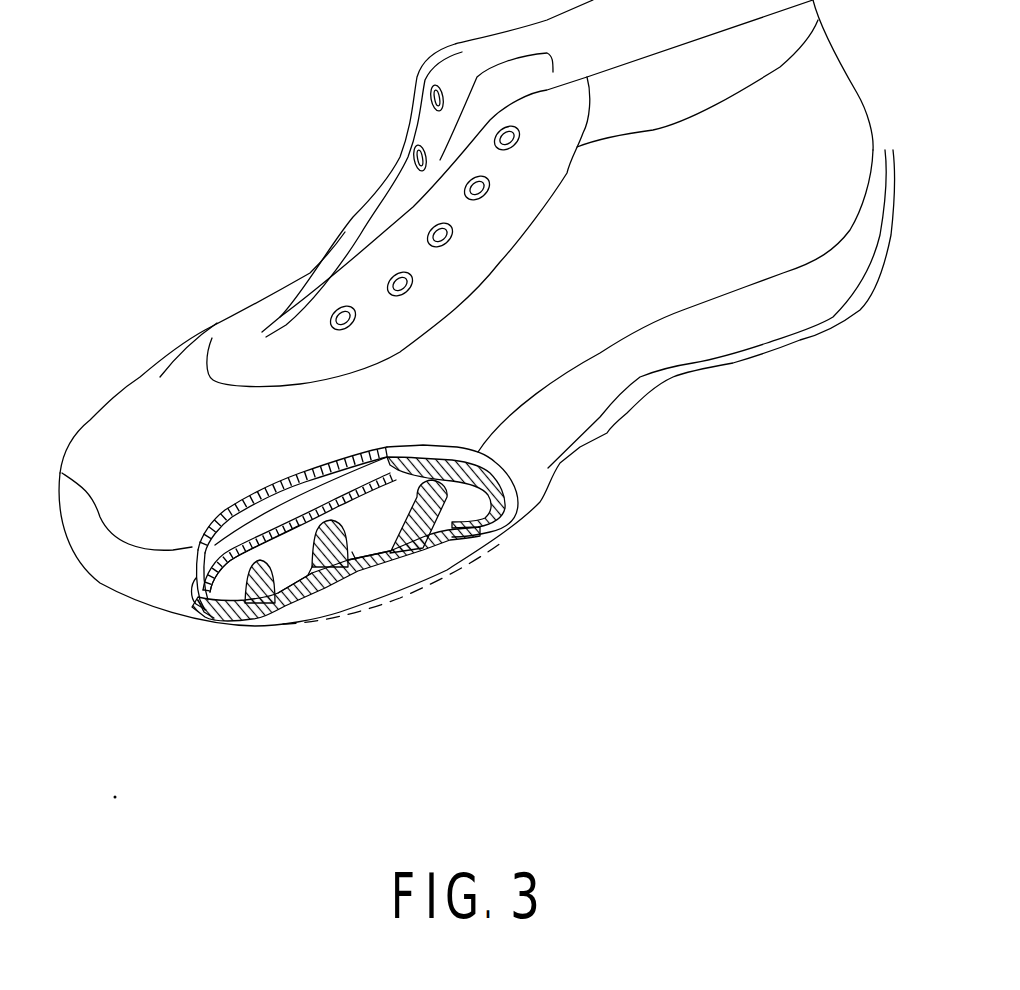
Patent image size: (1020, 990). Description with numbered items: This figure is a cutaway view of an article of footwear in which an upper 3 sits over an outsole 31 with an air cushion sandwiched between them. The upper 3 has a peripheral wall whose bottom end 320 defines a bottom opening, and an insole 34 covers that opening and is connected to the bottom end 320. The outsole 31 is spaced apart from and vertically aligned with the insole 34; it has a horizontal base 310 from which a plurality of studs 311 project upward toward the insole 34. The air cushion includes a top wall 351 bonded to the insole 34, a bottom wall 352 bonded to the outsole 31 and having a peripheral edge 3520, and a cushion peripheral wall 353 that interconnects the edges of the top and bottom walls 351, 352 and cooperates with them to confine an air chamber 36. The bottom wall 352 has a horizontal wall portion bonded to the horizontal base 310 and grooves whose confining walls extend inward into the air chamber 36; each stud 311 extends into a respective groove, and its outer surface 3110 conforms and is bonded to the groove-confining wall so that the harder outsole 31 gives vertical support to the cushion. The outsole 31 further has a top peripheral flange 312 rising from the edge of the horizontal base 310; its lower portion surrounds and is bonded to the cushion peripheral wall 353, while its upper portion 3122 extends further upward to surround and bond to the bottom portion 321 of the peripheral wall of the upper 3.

The upper 3 is at (240, 308).
The outsole 31 is at (269, 618).
The horizontal base 310 is at (341, 575).
The studs 311 is at (277, 600).
The outer surface 3110 is at (316, 573).
The top peripheral flange 312 is at (521, 478).
The upper portion 3122 is at (478, 464).
The bottom end 320 is at (472, 463).
The bottom portion 321 is at (205, 545).
The insole 34 is at (270, 512).
The top wall 351 is at (360, 540).
The bottom wall 352 is at (300, 543).
The peripheral edge 3520 is at (198, 600).
The cushion peripheral wall 353 is at (200, 597).
The air chamber 36 is at (400, 497).